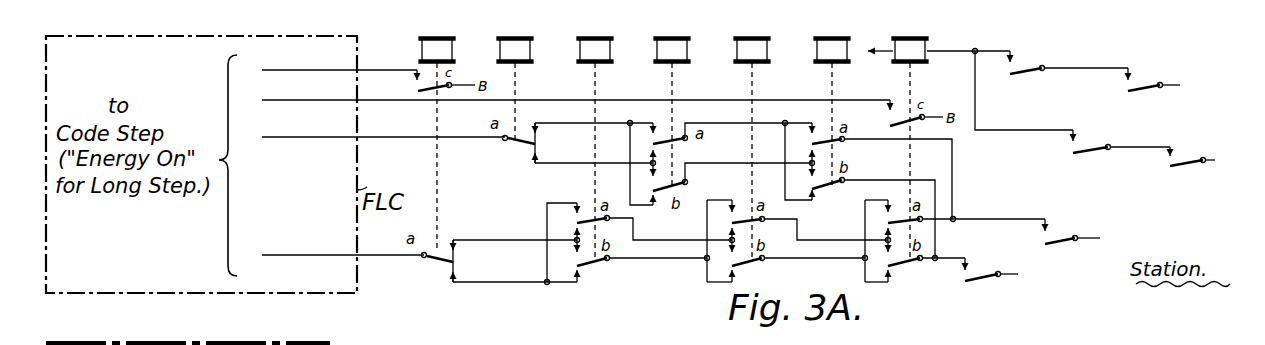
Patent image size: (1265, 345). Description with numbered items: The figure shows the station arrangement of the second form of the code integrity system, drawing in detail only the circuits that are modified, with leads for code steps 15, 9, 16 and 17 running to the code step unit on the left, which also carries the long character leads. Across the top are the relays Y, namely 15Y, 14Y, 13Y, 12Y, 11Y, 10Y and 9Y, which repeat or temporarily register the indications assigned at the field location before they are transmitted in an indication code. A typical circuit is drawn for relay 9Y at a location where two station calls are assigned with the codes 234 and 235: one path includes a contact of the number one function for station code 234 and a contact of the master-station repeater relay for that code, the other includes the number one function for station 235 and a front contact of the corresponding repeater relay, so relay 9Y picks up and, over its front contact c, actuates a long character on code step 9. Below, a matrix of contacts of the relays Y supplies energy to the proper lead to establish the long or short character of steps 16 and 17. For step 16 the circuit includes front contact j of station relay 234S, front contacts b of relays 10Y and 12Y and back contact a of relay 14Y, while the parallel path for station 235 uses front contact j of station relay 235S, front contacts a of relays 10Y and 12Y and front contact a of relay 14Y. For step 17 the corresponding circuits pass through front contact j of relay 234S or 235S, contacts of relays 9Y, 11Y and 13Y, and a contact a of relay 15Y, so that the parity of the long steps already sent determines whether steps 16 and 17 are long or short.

The code step lead 15 is at (325, 71).
The code step lead 9 is at (567, 101).
The code step lead 16 is at (370, 137).
The code step lead 17 is at (330, 256).
The indication repeater relay 15Y is at (434, 132).
The indication repeater relay 14Y is at (512, 77).
The indication repeater relay 13Y is at (592, 138).
The indication repeater relay 12Y is at (669, 101).
The indication repeater relay 11Y is at (749, 138).
The indication repeater relay 10Y is at (829, 100).
The indication repeater relay 9Y is at (933, 138).
The station code 234 is at (1099, 57).
The station code 235 is at (1101, 109).
The station relay 234S is at (977, 259).
The station relay 235S is at (1018, 222).